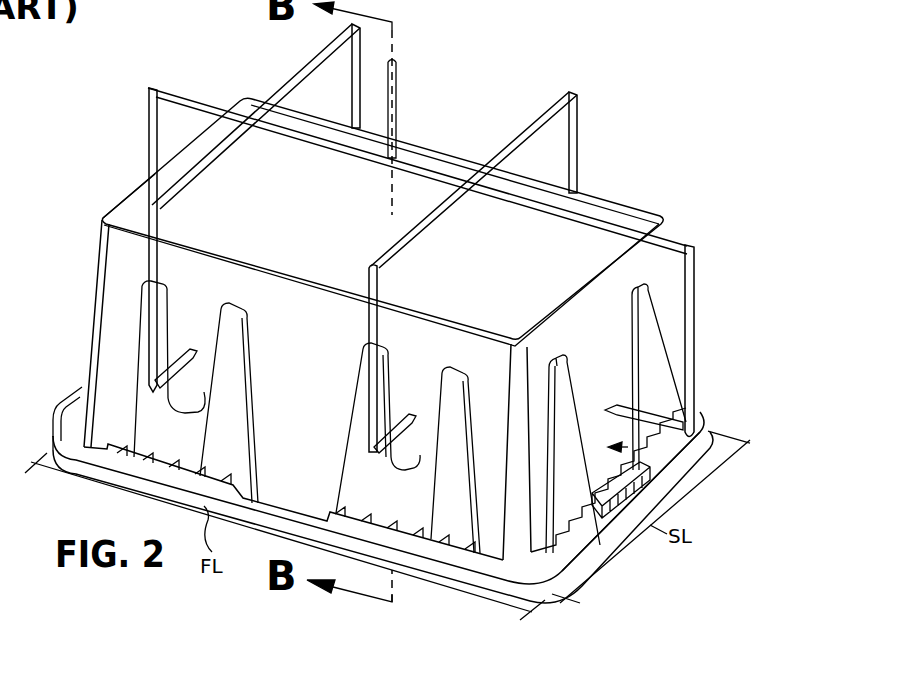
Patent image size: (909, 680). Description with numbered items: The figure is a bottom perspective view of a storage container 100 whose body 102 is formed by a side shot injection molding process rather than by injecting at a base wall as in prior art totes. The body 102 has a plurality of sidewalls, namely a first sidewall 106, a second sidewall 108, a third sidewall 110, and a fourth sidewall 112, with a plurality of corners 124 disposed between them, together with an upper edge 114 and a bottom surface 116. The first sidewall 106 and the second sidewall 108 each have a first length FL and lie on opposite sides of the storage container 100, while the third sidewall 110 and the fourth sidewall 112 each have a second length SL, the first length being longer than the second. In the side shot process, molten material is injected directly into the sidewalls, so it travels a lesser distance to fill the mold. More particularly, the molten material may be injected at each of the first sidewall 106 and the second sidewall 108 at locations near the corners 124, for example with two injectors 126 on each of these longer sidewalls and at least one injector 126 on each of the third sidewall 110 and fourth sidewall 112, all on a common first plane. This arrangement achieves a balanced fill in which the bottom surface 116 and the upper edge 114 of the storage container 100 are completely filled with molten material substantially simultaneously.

The storage container 100 is at (516, 80).
The body 102 is at (88, 459).
The first sidewall 106 is at (299, 488).
The second sidewall 108 is at (638, 212).
The third sidewall 110 is at (630, 448).
The fourth sidewall 112 is at (119, 207).
The upper edge 114 is at (574, 568).
The bottom surface 116 is at (447, 151).
The corners 124 is at (82, 358).
The injectors 126 is at (180, 368).